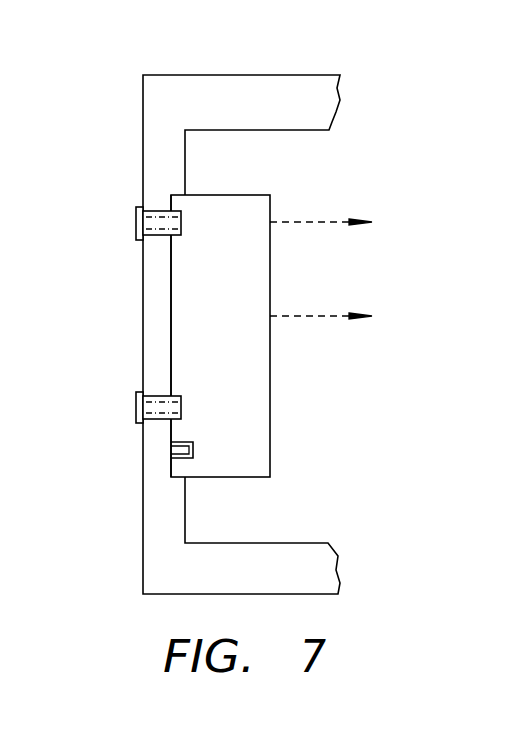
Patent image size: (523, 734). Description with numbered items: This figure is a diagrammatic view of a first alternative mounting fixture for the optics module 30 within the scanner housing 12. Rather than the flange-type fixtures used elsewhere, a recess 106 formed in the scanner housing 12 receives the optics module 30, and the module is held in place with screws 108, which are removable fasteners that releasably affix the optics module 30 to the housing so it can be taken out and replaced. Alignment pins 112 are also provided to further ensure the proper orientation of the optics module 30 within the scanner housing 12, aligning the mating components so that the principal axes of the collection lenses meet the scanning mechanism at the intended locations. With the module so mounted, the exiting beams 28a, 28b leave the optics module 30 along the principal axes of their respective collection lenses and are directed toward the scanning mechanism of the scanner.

The scanner housing 12 is at (223, 75).
The optics module 30 is at (250, 420).
The recess 106 is at (178, 197).
The screws 108 is at (135, 223).
The alignment pins 112 is at (177, 458).
The exiting beam 28a is at (315, 313).
The exiting beam 28b is at (315, 220).